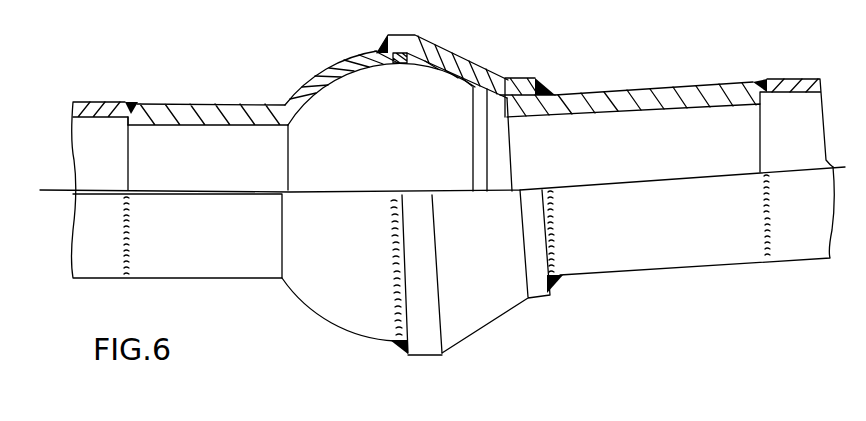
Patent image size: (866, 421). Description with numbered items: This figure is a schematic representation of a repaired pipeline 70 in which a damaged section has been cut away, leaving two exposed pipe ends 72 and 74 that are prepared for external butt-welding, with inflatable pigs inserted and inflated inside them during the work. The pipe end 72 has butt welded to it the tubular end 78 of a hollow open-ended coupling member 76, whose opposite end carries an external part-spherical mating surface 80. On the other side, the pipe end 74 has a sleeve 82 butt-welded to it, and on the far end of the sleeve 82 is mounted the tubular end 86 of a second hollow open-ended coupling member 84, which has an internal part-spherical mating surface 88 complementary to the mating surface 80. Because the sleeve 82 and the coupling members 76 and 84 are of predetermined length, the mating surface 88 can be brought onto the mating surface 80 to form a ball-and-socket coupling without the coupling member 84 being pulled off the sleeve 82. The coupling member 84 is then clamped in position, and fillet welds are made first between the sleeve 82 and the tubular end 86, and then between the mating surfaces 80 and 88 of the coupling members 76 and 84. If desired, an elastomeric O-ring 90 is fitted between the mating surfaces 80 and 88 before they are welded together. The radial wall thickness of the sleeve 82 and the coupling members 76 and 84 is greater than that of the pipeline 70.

The pipeline 70 is at (86, 101).
The pipe end 72 is at (110, 108).
The pipe end 74 is at (782, 77).
The coupling member 76 is at (333, 322).
The tubular end 78 is at (207, 103).
The external part-spherical mating surface 80 is at (320, 77).
The sleeve 82 is at (590, 92).
The coupling member 84 is at (489, 323).
The tubular end 86 is at (518, 77).
The internal part-spherical mating surface 88 is at (473, 110).
The O-ring 90 is at (398, 65).